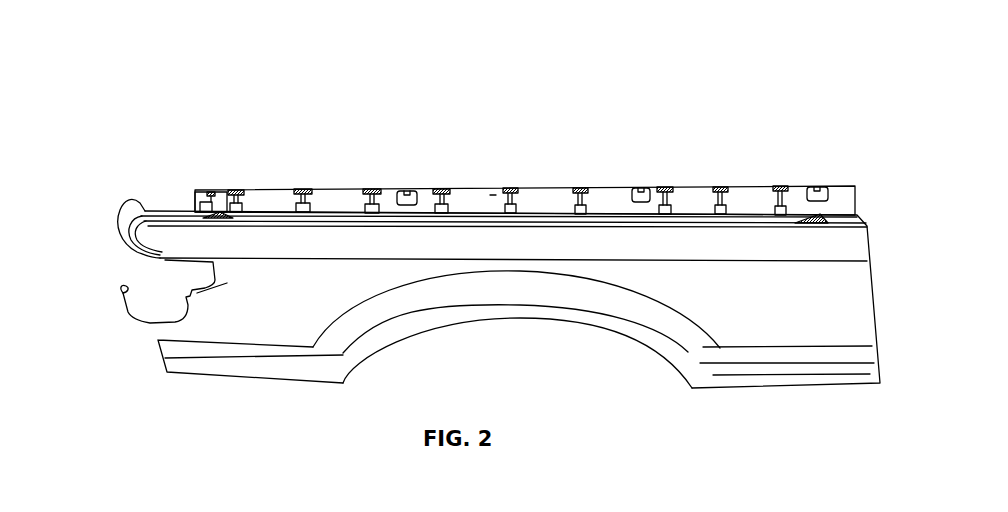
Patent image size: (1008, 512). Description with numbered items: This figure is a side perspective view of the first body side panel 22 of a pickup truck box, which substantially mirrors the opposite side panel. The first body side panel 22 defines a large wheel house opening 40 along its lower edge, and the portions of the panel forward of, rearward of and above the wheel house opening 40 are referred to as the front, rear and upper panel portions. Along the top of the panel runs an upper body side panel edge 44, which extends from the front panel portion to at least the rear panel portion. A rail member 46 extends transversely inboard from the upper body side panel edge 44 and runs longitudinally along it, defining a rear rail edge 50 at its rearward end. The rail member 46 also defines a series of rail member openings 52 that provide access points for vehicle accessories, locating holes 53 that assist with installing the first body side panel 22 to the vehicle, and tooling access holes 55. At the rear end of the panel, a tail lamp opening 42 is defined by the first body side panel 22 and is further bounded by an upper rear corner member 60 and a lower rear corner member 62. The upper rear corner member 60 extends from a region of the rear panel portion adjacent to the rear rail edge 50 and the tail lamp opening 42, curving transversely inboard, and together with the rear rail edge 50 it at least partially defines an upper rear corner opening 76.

The first body side panel 22 is at (352, 93).
The wheel house opening 40 is at (457, 318).
The tail lamp opening 42 is at (161, 268).
The upper body side panel edge 44 is at (472, 208).
The rail member 46 is at (493, 193).
The rear rail edge 50 is at (195, 203).
The rail member openings 52 is at (374, 190).
The locating holes 53 is at (210, 192).
The tooling access holes 55 is at (407, 191).
The upper rear corner member 60 is at (121, 213).
The lower rear corner member 62 is at (133, 330).
The upper rear corner opening 76 is at (156, 203).